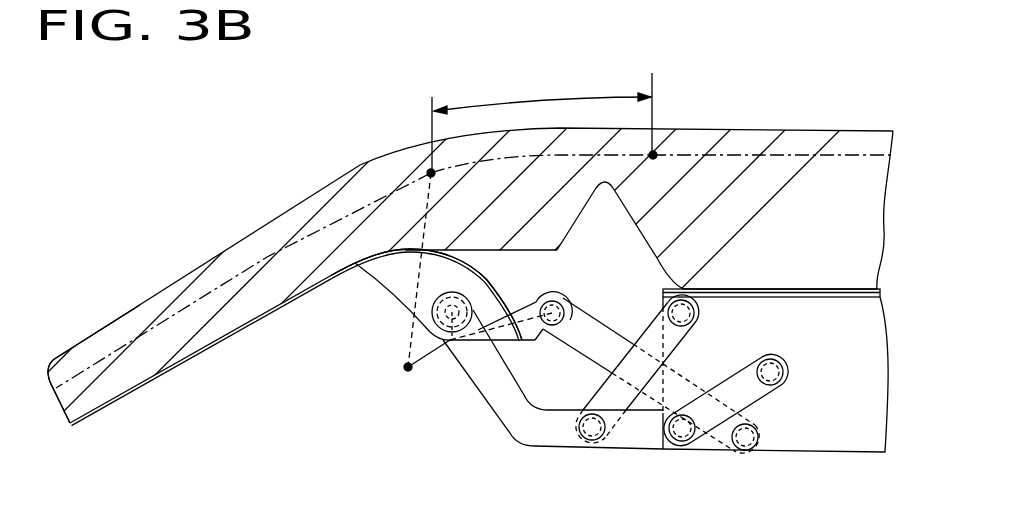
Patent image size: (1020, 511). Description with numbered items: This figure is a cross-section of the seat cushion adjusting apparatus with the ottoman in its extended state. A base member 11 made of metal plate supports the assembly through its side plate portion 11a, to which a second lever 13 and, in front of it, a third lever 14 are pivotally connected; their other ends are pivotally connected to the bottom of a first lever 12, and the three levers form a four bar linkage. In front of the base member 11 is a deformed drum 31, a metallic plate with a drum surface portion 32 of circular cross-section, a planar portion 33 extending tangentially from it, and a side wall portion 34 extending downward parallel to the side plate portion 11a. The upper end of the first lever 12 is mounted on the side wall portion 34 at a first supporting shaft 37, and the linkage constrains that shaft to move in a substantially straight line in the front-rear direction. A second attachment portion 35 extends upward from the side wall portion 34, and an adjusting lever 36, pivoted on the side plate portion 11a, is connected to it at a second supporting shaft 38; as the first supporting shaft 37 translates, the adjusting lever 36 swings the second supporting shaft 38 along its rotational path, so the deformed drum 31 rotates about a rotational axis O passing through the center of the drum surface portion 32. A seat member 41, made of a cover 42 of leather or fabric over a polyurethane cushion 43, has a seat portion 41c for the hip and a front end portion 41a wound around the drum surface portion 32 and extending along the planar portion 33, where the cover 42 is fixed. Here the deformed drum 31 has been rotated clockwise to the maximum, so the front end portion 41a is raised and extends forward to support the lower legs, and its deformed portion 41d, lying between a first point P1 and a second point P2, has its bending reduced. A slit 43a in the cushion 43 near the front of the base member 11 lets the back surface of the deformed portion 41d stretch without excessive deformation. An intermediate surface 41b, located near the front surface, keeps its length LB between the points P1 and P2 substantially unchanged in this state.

The seat member 41 is at (353, 127).
The cover 42 is at (291, 207).
The cushion 43 is at (340, 202).
The front end portion 41a is at (140, 310).
The intermediate surface 41b is at (713, 150).
The seat portion 41c is at (800, 137).
The deformed portion 41d is at (596, 140).
The slit 43a is at (648, 240).
The deformed drum 31 is at (494, 272).
The drum surface portion 32 is at (504, 306).
The planar portion 33 is at (214, 345).
The side wall portion 34 is at (378, 276).
The second attachment portion 35 is at (538, 337).
The adjusting lever 36 is at (627, 337).
The first supporting shaft 37 is at (449, 345).
The second supporting shaft 38 is at (560, 298).
The base member 11 is at (828, 306).
The side plate portion 11a is at (765, 302).
The first lever 12 is at (548, 433).
The second lever 13 is at (764, 389).
The third lever 14 is at (681, 336).
The first point P1 is at (654, 159).
The second point P2 is at (435, 177).
The rotational axis O is at (407, 368).
The second length LB is at (526, 101).